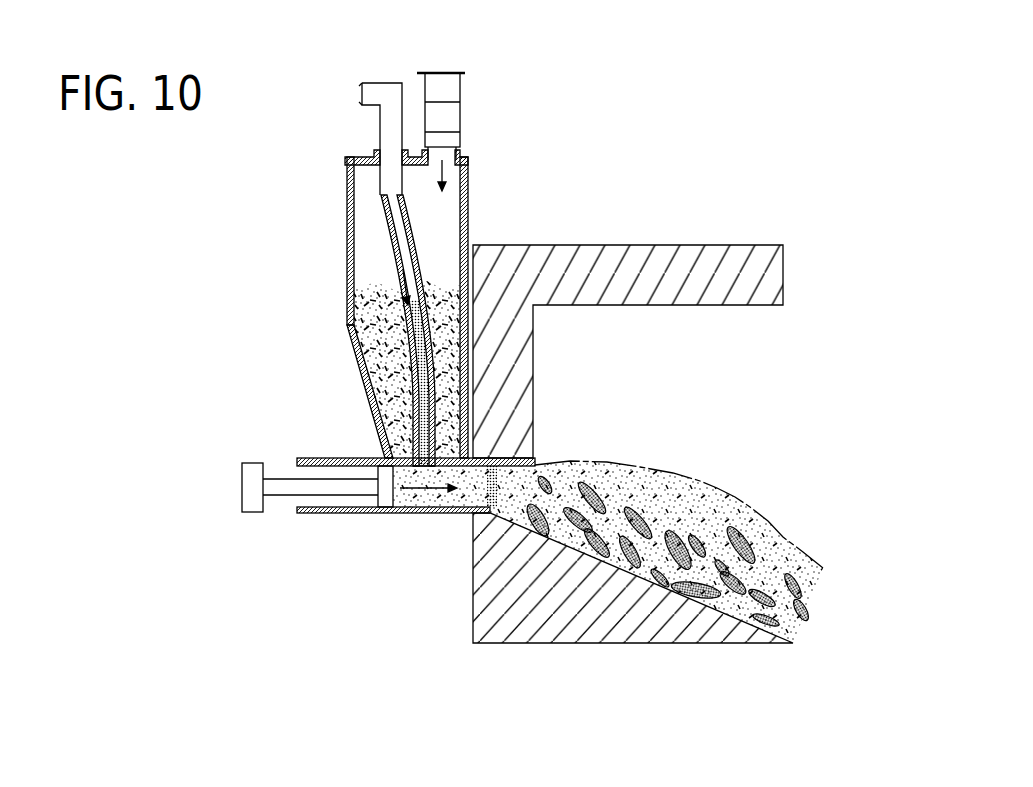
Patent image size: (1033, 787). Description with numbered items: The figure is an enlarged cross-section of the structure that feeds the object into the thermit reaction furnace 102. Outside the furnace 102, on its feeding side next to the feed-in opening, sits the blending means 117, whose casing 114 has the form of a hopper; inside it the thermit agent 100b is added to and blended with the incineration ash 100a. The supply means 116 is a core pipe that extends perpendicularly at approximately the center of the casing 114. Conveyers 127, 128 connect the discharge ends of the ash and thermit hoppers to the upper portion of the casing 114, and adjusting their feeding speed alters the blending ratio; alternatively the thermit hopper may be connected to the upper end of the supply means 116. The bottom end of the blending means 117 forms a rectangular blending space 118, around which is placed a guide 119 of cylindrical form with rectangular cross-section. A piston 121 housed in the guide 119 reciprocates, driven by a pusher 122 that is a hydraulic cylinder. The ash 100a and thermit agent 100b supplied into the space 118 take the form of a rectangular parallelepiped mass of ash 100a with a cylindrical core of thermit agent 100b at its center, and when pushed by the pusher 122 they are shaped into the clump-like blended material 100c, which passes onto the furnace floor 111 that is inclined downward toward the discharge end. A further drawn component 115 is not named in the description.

The incineration ash 100a is at (376, 366).
The thermit agent 100b is at (788, 580).
The blended material 100c is at (735, 482).
The furnace 102 is at (645, 244).
The furnace floor 111 is at (607, 628).
The casing 114 is at (346, 162).
The pushing device 115 is at (276, 521).
The supply means 116 is at (386, 220).
The blending means 117 is at (421, 238).
The blending space 118 is at (441, 467).
The guide 119 is at (308, 515).
The piston 121 is at (387, 507).
The pusher 122 is at (253, 515).
The conveyer 127 is at (442, 72).
The conveyer 128 is at (388, 82).